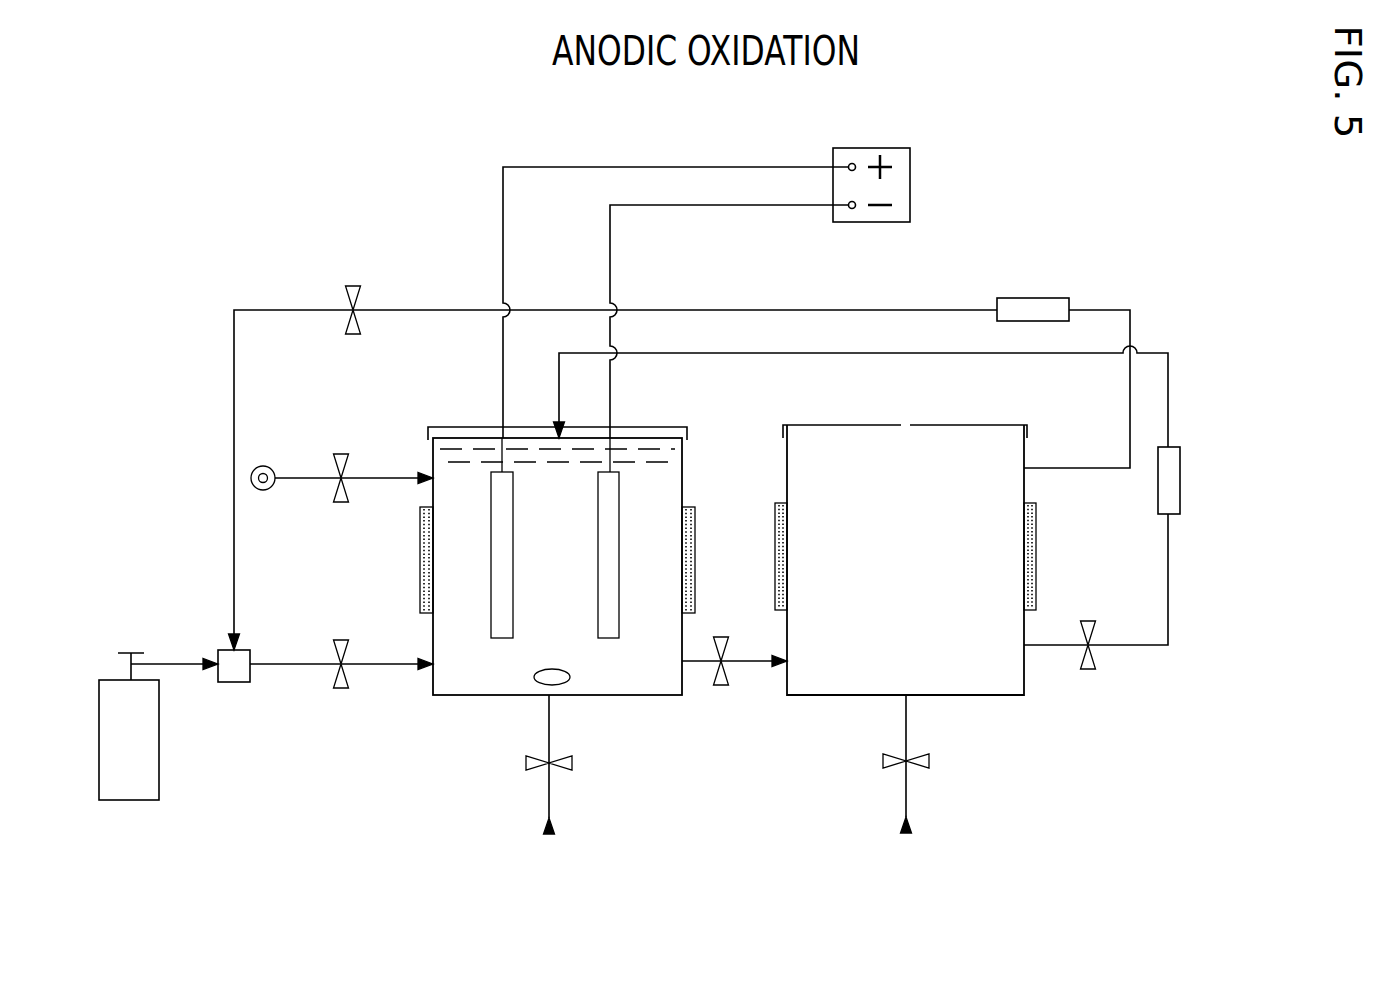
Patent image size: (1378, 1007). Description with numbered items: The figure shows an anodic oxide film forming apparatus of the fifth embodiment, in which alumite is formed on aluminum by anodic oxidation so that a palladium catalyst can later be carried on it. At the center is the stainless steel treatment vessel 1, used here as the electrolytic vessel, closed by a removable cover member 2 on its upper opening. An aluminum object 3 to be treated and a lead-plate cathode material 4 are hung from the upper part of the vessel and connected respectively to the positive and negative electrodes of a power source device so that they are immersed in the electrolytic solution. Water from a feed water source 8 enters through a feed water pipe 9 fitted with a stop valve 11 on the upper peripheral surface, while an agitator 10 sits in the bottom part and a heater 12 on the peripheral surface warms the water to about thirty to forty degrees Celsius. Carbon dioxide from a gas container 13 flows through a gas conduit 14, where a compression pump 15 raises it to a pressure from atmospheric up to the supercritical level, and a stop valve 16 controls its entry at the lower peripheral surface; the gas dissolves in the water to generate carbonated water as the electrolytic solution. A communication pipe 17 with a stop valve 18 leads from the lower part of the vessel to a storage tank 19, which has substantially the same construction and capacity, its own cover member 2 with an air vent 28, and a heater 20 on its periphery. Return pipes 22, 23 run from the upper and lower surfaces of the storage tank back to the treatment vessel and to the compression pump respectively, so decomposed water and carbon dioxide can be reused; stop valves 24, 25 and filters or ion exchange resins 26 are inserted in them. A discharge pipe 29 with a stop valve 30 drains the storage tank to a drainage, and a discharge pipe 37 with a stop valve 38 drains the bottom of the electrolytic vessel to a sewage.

The treatment vessel 1 is at (688, 447).
The cover member 2 is at (568, 426).
The object to be treated 3 is at (491, 580).
The cathode material 4 is at (610, 583).
The feed water source 8 is at (263, 466).
The feed water pipe 9 is at (304, 476).
The agitator 10 is at (420, 558).
The stop valve 11 is at (341, 453).
The heater 12 is at (695, 565).
The gas container 13 is at (155, 773).
The gas conduit 14 is at (290, 662).
The compression pump 15 is at (233, 682).
The stop valve 16 is at (340, 690).
The communication pipe 17 is at (748, 658).
The stop valve 18 is at (722, 686).
The storage tank 19 is at (998, 432).
The heater 20 is at (775, 507).
The return pipe 22 is at (1168, 590).
The return pipe 23 is at (915, 300).
The stop valve 24 is at (1090, 671).
The stop valve 25 is at (353, 285).
The filter 26 is at (1033, 298).
The air vent 28 is at (905, 425).
The discharge pipe 29 is at (908, 720).
The stop valve 30 is at (930, 761).
The discharge pipe 37 is at (551, 723).
The stop valve 38 is at (574, 763).